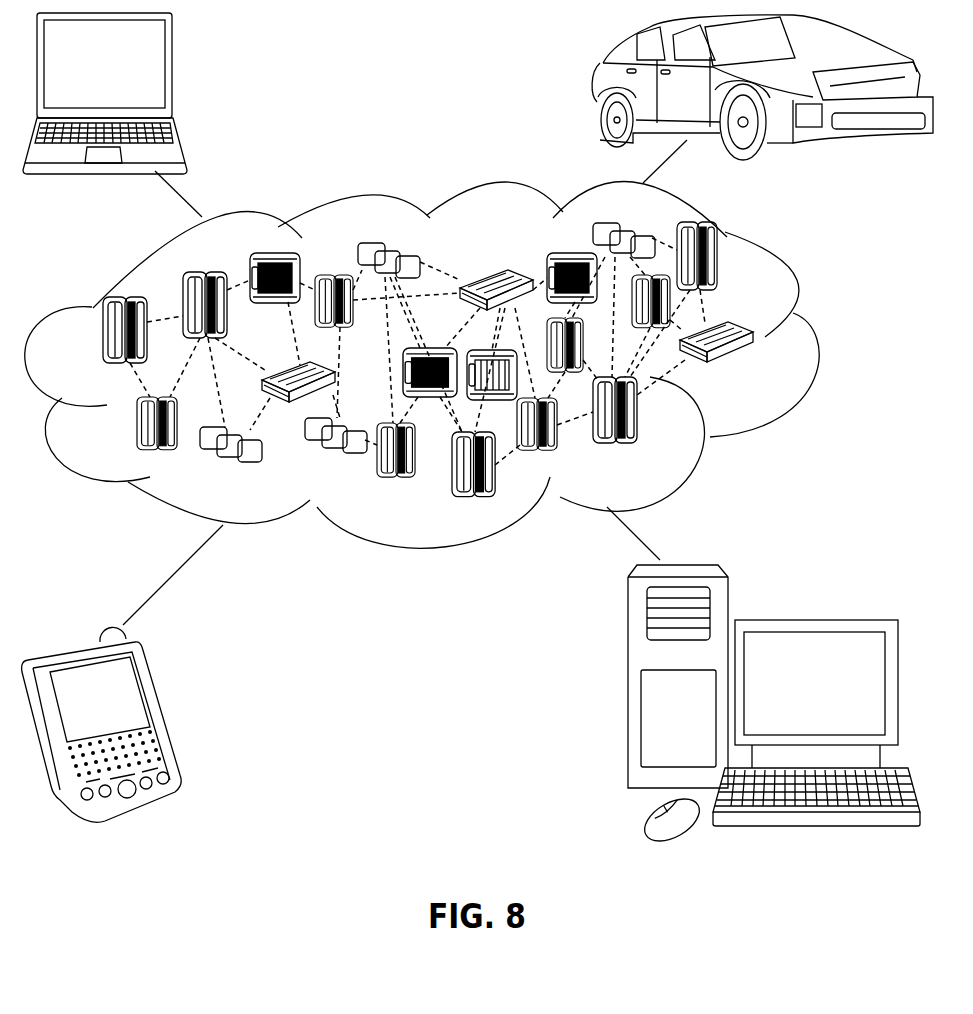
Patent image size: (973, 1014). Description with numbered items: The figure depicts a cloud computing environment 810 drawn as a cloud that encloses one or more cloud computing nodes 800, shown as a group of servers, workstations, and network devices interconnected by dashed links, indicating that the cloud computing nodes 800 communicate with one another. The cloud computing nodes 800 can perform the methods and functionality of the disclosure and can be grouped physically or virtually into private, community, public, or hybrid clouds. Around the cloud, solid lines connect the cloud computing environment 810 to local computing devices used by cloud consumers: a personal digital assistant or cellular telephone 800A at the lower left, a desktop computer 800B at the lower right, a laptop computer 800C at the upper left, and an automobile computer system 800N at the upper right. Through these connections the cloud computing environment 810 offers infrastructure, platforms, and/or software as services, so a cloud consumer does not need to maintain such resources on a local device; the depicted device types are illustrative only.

The cloud computing nodes 800 is at (762, 369).
The cloud computing environment 810 is at (812, 341).
The personal digital assistant (PDA) or cellular telephone 800A is at (162, 715).
The desktop computer 800B is at (812, 618).
The laptop computer 800C is at (173, 73).
The automobile computer system 800N is at (597, 80).